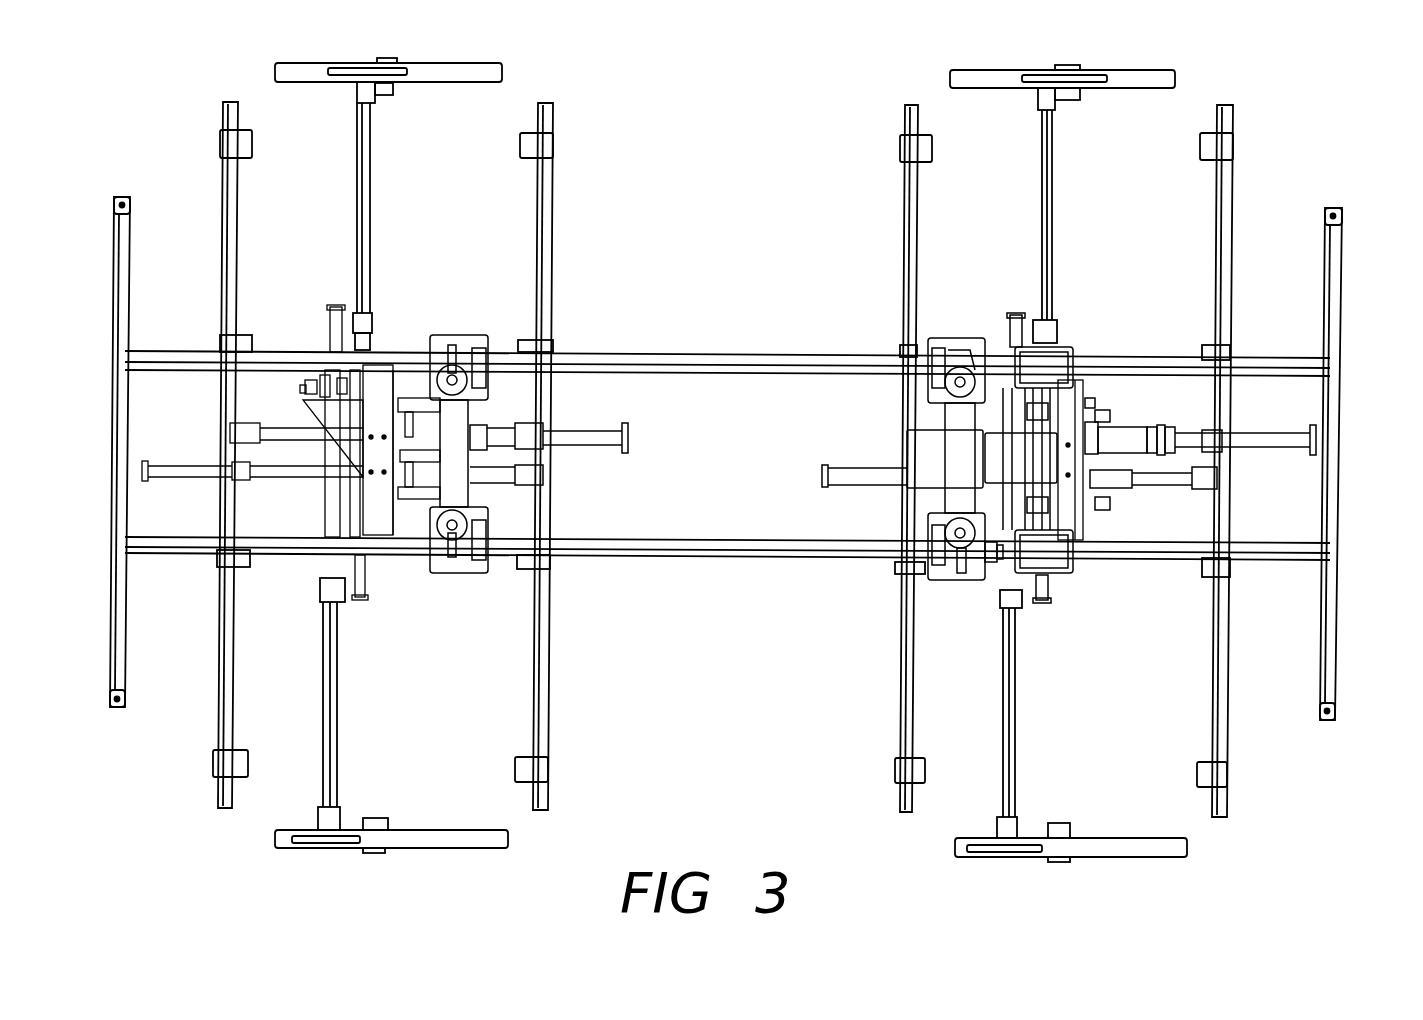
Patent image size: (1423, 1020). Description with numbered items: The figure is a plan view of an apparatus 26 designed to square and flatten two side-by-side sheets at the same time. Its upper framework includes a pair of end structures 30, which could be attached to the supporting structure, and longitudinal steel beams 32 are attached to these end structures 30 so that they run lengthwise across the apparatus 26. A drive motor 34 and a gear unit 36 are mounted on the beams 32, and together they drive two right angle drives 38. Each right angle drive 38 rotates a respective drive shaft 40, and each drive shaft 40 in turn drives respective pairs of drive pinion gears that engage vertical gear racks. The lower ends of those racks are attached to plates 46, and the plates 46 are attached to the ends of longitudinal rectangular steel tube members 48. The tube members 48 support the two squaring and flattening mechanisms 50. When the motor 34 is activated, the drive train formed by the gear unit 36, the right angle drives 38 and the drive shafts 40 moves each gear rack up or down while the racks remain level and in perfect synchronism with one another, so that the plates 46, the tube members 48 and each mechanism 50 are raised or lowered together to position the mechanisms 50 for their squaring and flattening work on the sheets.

The apparatus 26 is at (852, 57).
The end structures 30 is at (113, 282).
The longitudinal steel beams 32 is at (153, 553).
The drive motor 34 is at (927, 484).
The gear unit 36 is at (1008, 447).
The right angle drives 38 is at (1043, 365).
The drive shafts 40 is at (628, 350).
The plates 46 is at (383, 355).
The longitudinal rectangular steel tube members 48 is at (703, 352).
The squaring and flattening mechanisms 50 is at (602, 176).